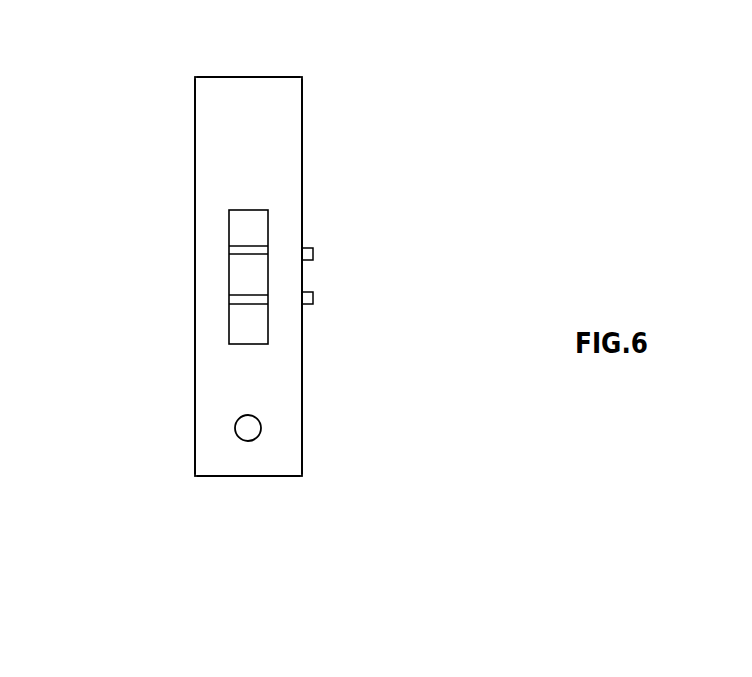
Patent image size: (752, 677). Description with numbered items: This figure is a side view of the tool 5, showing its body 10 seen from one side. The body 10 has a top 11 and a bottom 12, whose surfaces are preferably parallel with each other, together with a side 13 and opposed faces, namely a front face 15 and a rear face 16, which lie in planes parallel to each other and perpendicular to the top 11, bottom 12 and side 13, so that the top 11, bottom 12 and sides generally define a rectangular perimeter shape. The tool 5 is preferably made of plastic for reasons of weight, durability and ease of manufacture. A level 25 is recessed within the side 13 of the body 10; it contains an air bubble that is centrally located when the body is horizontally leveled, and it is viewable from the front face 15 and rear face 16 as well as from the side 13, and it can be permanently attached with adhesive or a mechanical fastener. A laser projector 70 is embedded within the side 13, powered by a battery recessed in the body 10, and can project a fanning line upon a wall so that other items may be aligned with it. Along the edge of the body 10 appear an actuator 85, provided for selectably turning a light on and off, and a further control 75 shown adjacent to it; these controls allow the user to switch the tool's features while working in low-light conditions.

The tool 5 is at (397, 159).
The body 10 is at (206, 432).
The top 11 is at (248, 77).
The bottom 12 is at (233, 476).
The side 13 is at (226, 123).
The front face 15 is at (302, 369).
The rear face 16 is at (202, 374).
The level 25 is at (245, 274).
The laser projector 70 is at (261, 420).
The first switch 75 is at (313, 256).
The actuator 85 is at (313, 298).